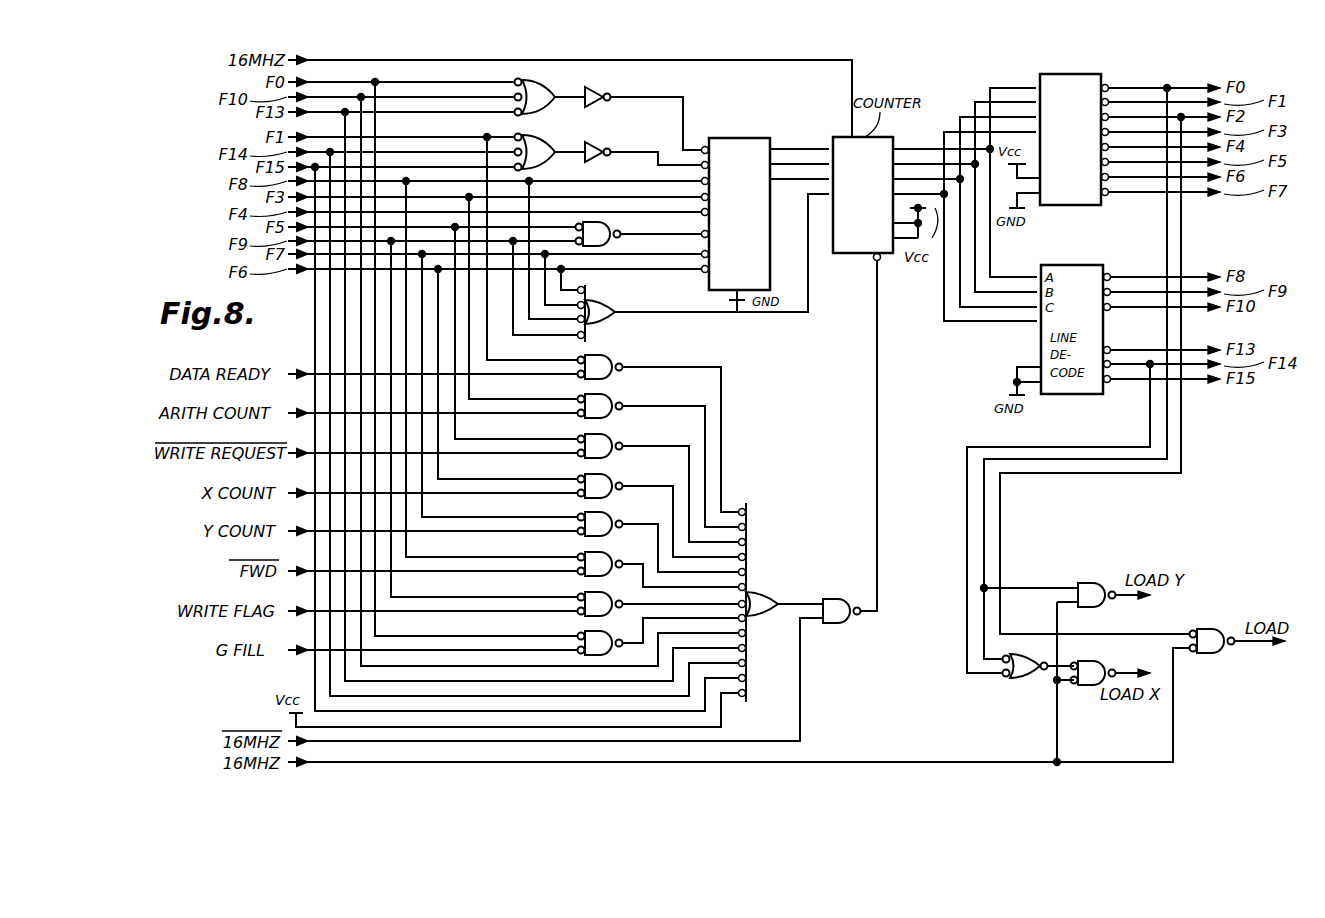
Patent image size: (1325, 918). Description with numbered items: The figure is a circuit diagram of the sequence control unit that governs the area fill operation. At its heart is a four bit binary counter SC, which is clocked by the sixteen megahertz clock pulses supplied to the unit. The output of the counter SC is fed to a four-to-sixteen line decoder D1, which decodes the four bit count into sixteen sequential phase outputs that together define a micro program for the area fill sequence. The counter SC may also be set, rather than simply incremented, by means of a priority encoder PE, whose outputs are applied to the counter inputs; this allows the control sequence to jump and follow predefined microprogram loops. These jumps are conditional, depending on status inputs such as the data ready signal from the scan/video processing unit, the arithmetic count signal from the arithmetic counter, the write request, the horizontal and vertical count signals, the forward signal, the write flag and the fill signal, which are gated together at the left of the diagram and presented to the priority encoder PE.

The priority encoder PE is at (757, 137).
The four bit binary counter SC is at (828, 259).
The 4-to-16 line decoder D1 is at (1072, 206).